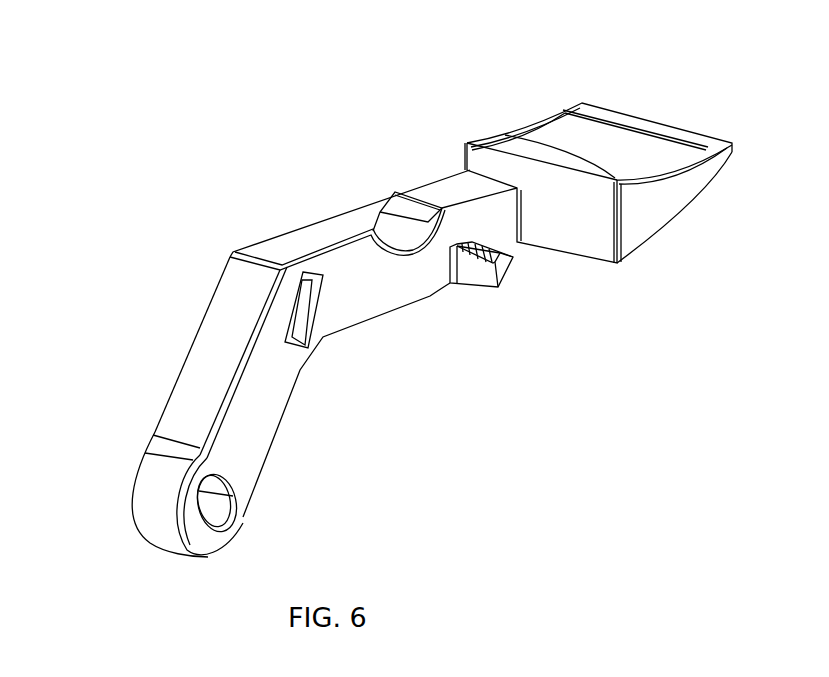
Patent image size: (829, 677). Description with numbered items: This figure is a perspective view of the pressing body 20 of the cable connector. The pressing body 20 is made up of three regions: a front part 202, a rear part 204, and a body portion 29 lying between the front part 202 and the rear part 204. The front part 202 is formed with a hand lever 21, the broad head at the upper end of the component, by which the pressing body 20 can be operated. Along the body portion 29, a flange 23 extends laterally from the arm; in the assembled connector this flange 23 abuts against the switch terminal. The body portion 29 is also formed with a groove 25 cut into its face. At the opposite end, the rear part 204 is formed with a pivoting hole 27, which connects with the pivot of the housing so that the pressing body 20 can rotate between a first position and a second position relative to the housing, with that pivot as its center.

The pressing body 20 is at (384, 295).
The front part 202 is at (665, 101).
The rear part 204 is at (112, 486).
The hand lever 21 is at (590, 135).
The flange 23 is at (507, 270).
The groove 25 is at (302, 317).
The pivoting hole 27 is at (212, 510).
The body portion 29 is at (307, 238).